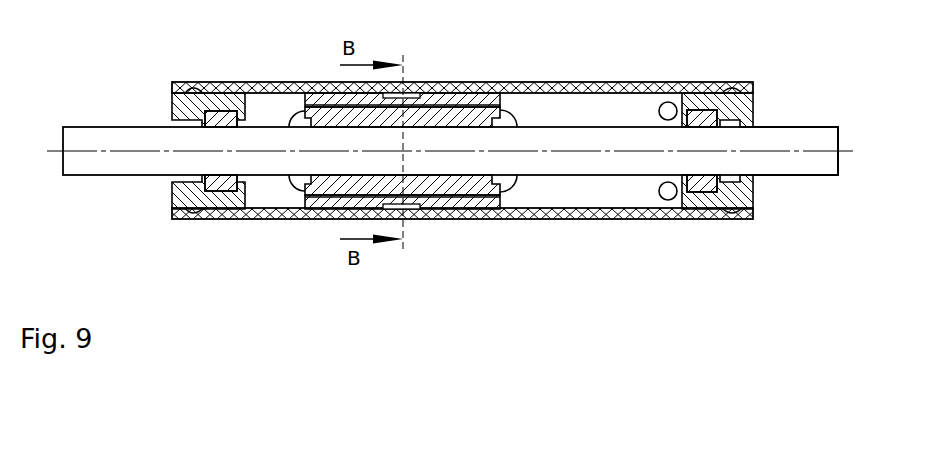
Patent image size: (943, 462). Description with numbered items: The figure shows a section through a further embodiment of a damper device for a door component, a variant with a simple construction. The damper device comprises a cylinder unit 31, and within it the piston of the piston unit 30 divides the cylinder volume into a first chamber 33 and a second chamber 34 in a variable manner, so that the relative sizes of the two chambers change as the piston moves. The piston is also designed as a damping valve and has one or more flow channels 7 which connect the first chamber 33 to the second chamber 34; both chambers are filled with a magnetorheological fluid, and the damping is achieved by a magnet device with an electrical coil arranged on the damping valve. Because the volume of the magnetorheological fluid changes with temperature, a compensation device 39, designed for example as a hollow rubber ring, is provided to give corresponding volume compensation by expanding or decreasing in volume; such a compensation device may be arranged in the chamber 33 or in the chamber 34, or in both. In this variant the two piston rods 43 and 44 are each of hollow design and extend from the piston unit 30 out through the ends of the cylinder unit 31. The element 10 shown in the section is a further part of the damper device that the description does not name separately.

The flow channel 7 is at (447, 108).
The bearing 10 is at (295, 182).
The piston unit 30 is at (421, 70).
The cylinder unit 31 is at (552, 218).
The first chamber 33 is at (278, 112).
The second chamber 34 is at (583, 108).
The compensation device 39 is at (667, 201).
The piston rod 43 is at (137, 138).
The piston rod 44 is at (788, 137).